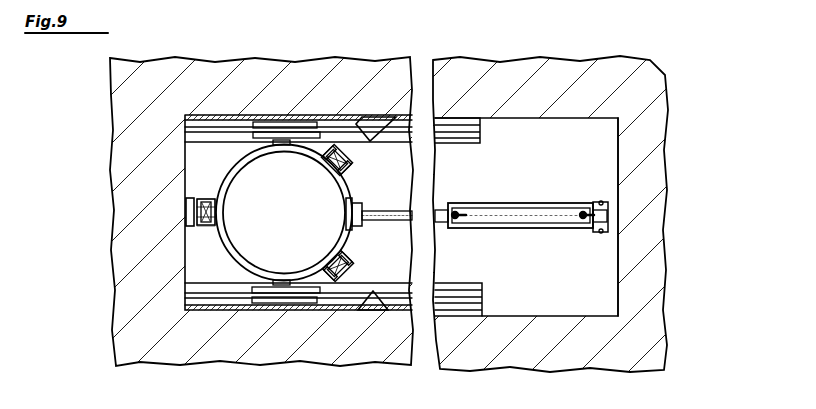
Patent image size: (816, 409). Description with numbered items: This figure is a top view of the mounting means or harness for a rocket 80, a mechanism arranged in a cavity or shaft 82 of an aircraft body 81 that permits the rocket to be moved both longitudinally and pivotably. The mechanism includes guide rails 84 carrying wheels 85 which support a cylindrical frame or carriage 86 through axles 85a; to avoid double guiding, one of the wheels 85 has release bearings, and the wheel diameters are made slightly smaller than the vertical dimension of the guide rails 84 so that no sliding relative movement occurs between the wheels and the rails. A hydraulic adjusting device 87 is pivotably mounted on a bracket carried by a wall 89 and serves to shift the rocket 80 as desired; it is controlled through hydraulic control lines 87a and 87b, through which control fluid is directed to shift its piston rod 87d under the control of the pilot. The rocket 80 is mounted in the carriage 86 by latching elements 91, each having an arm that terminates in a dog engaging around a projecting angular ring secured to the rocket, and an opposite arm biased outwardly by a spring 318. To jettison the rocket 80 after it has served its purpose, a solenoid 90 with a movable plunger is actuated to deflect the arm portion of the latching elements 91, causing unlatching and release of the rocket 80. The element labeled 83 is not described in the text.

The rocket 80 is at (250, 250).
The aircraft body 81 is at (650, 88).
The cavity or shaft 82 is at (556, 186).
The guide rails 83 is at (540, 117).
The guide rails 84 is at (453, 125).
The wheels 85 is at (283, 126).
The axles 85a is at (282, 142).
The cylindrical frame or carriage 86 is at (245, 157).
The hydraulic adjusting device 87 is at (527, 222).
The hydraulic control line 87a is at (455, 208).
The hydraulic control line 87b is at (583, 208).
The piston rod 87d is at (394, 222).
The wall 89 is at (620, 172).
The solenoid 90 is at (373, 124).
The latching elements 91 is at (337, 150).
The spring 318 is at (210, 198).